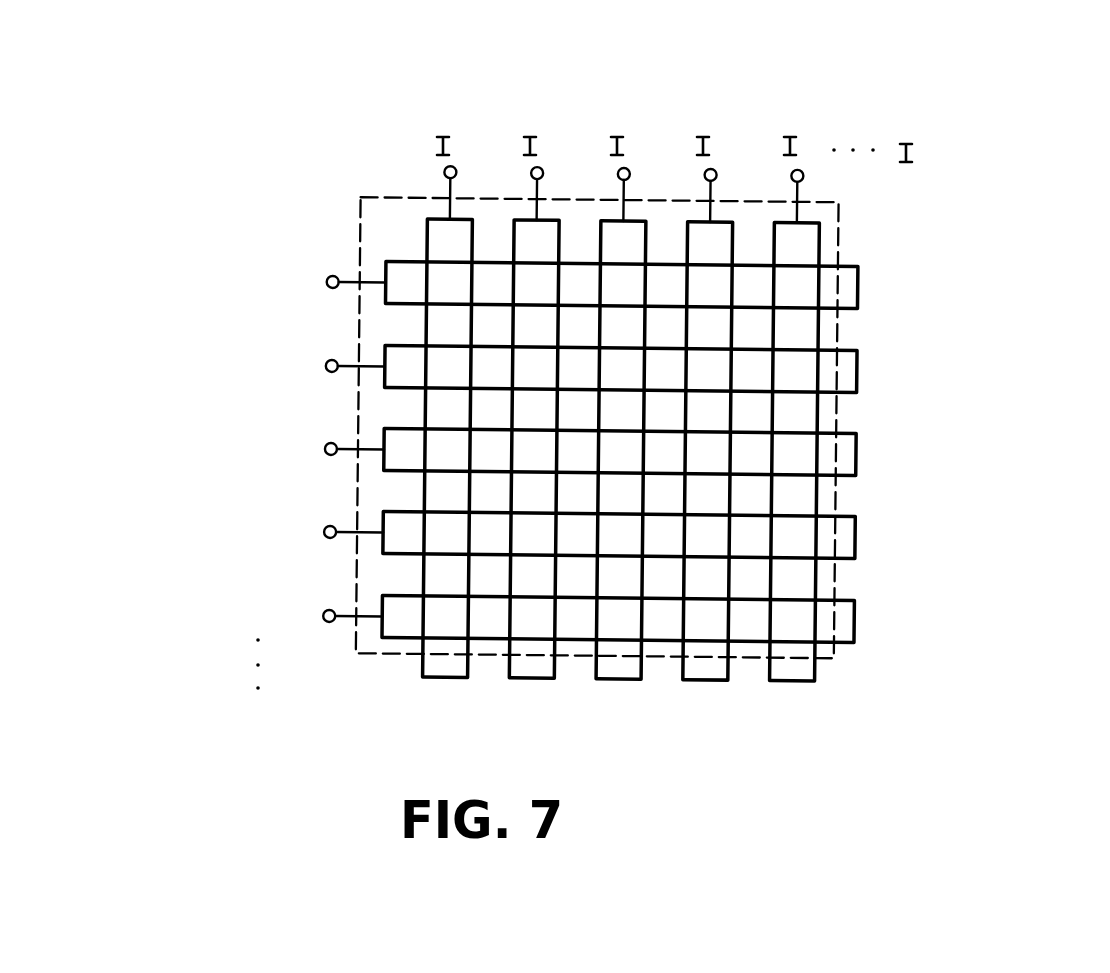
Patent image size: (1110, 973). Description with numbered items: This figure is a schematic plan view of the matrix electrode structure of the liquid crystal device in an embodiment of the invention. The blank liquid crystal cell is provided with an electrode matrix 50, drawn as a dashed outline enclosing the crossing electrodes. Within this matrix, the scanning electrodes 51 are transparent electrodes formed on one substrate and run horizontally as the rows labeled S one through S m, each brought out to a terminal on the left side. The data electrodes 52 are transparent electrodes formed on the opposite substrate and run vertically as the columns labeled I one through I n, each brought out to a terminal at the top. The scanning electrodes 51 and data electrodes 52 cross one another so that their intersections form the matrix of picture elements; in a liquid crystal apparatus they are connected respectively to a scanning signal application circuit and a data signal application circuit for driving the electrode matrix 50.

The electrode matrix 50 is at (845, 414).
The scanning electrodes 51 is at (231, 202).
The data electrodes 52 is at (927, 80).